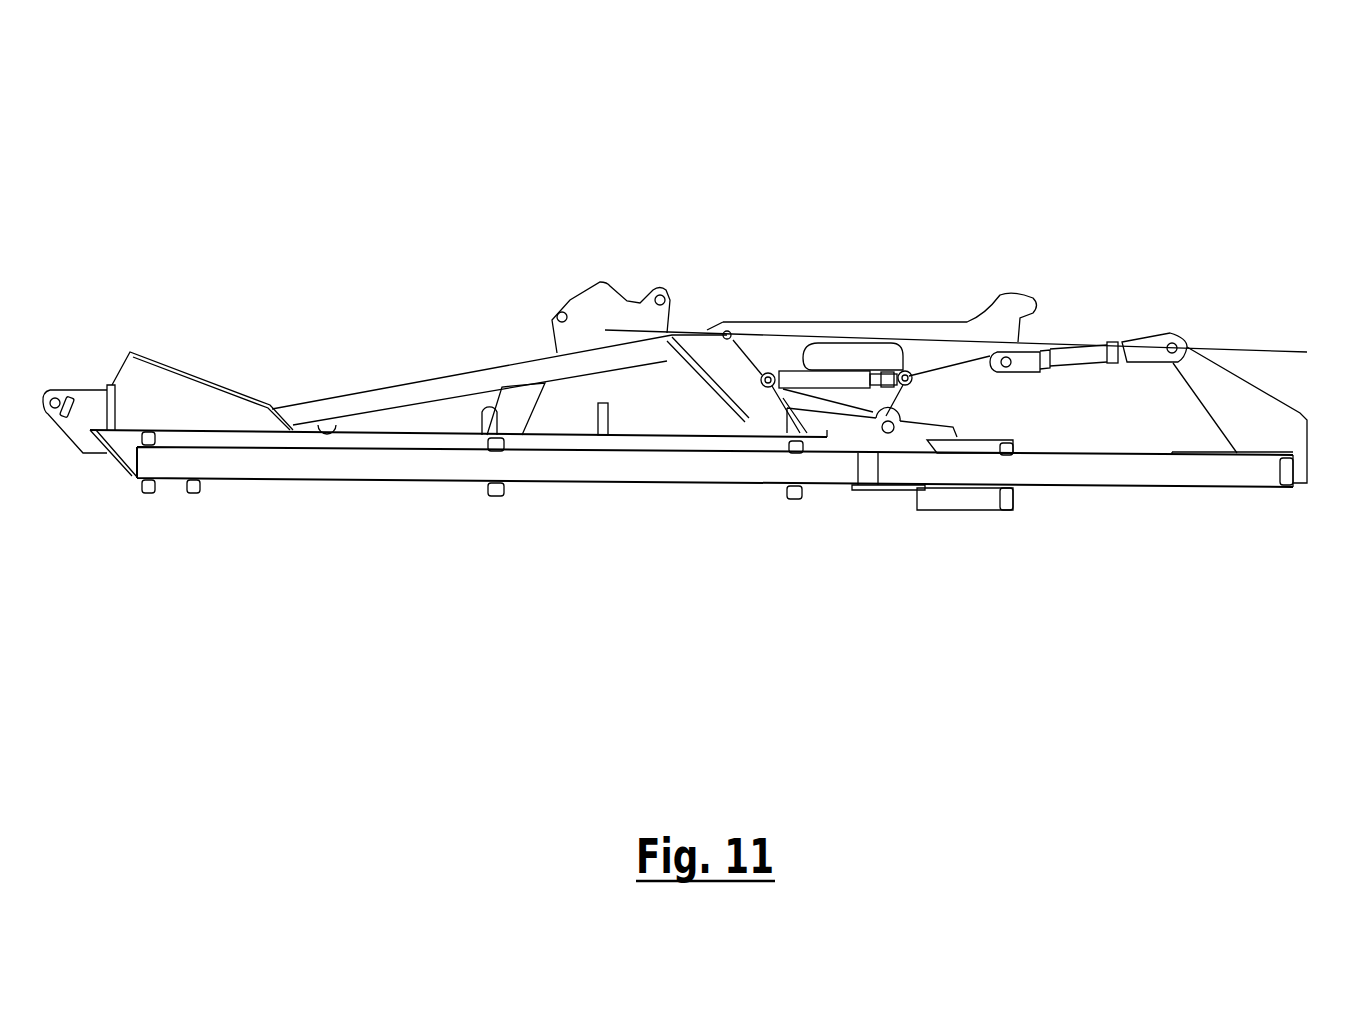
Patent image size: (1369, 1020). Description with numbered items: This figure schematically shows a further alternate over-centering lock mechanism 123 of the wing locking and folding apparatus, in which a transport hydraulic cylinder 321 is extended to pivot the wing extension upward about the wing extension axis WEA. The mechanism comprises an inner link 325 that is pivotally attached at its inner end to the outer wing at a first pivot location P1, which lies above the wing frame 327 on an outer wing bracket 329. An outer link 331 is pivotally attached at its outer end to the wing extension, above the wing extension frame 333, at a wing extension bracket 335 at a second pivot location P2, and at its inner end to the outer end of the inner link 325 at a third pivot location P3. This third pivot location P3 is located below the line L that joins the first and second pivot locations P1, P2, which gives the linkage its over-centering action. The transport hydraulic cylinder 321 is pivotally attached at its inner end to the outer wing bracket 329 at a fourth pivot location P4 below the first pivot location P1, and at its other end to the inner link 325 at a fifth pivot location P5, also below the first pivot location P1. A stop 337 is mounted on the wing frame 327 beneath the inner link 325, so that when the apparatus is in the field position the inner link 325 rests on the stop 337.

The lift mechanism 123 is at (852, 220).
The inner link 325 is at (912, 305).
The transport hydraulic cylinder 321 is at (833, 370).
The wing frame 327 is at (360, 480).
The outer wing bracket 329 is at (720, 397).
The outer link 331 is at (1087, 366).
The wing extension frame 333 is at (1120, 488).
The wing extension bracket 335 is at (1297, 410).
The stop 337 is at (845, 430).
The first pivot location P1 is at (733, 327).
The second pivot location P2 is at (1180, 341).
The third pivot location P3 is at (1006, 368).
The fourth pivot location P4 is at (766, 388).
The fifth pivot location P5 is at (906, 386).
The line L is at (1273, 349).
The wing extension axis WEA is at (890, 437).